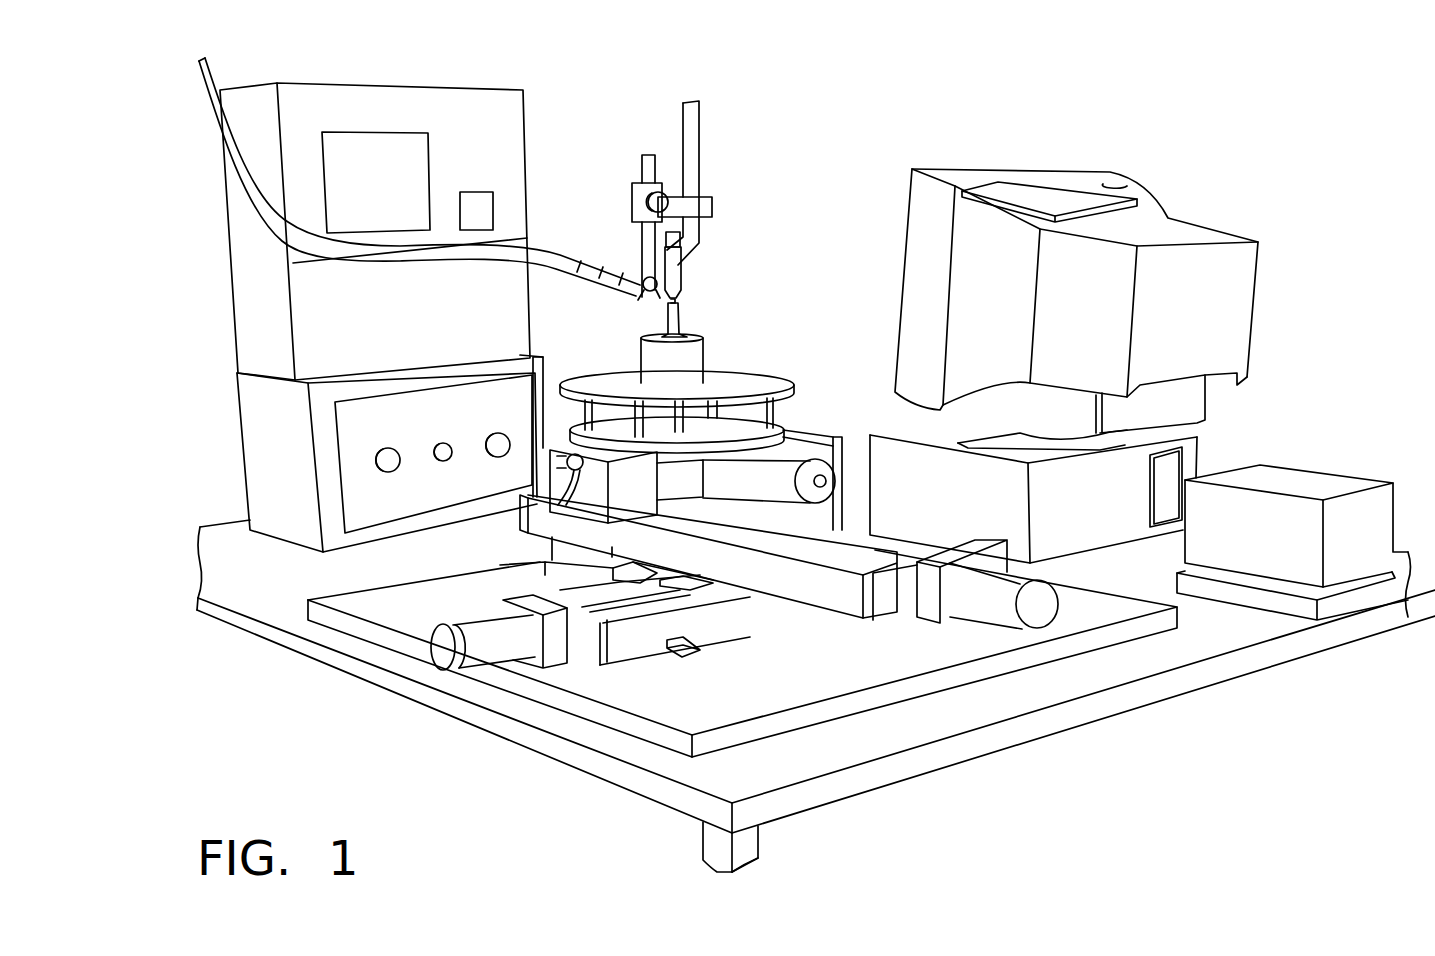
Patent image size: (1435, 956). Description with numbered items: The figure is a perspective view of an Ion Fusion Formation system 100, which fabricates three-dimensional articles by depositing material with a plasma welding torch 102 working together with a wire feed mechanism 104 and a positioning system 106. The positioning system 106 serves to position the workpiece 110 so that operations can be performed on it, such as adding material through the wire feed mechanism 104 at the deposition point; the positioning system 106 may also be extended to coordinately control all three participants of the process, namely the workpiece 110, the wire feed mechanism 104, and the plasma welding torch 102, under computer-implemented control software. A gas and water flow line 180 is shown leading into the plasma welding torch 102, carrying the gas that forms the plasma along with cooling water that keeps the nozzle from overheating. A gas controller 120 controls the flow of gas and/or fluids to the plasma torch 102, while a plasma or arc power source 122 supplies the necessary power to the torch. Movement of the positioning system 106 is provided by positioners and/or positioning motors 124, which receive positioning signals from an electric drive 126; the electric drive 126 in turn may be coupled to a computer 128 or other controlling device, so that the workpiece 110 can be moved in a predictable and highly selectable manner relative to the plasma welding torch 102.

The Ion Fusion Formation system 100 is at (1262, 136).
The plasma welding torch 102 is at (684, 282).
The wire feed mechanism 104 is at (216, 72).
The positioning system 106 is at (586, 349).
The workpiece 110 is at (680, 312).
The gas controller 120 is at (503, 149).
The plasma or arc power source 122 is at (447, 498).
The positioning motors 124 is at (482, 623).
The electric drive 126 is at (1277, 542).
The computer 128 is at (1075, 183).
The gas and water flow line 180 is at (700, 127).